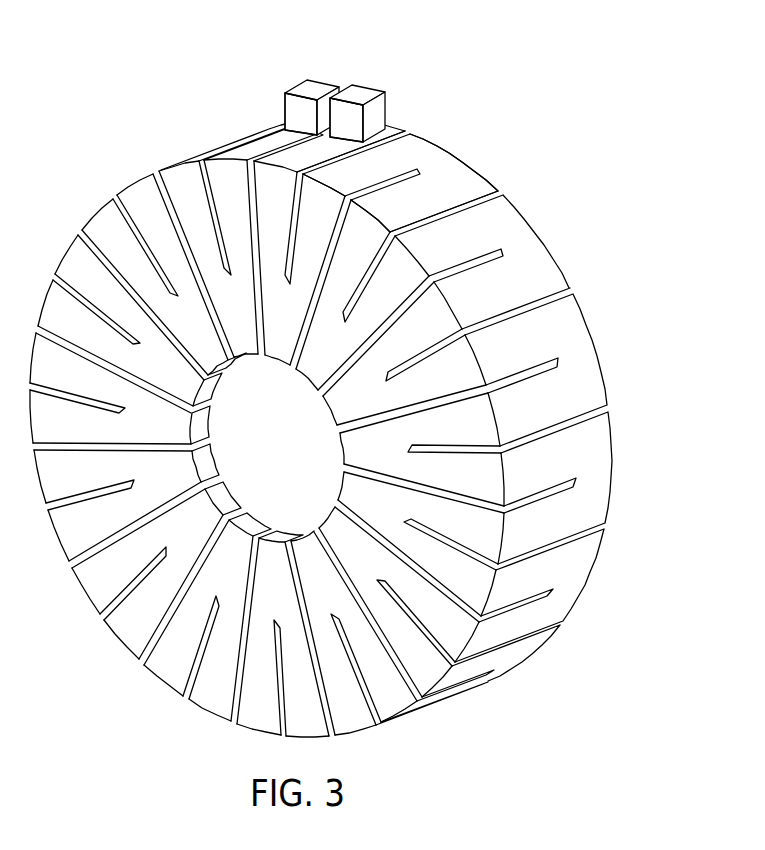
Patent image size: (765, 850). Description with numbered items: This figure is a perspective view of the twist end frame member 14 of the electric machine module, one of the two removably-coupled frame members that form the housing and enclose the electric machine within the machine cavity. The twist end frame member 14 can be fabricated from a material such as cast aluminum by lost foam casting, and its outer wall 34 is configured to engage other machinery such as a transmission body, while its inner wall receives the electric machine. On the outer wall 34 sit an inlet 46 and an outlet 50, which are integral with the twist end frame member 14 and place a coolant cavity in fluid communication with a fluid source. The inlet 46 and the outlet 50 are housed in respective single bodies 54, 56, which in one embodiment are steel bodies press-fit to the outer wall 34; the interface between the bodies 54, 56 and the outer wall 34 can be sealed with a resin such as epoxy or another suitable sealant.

The twist end frame member 14 is at (199, 37).
The outer wall 34 is at (448, 178).
The inlet 46 is at (360, 89).
The outlet 50 is at (315, 87).
The single body 54 is at (350, 123).
The single body 56 is at (298, 115).